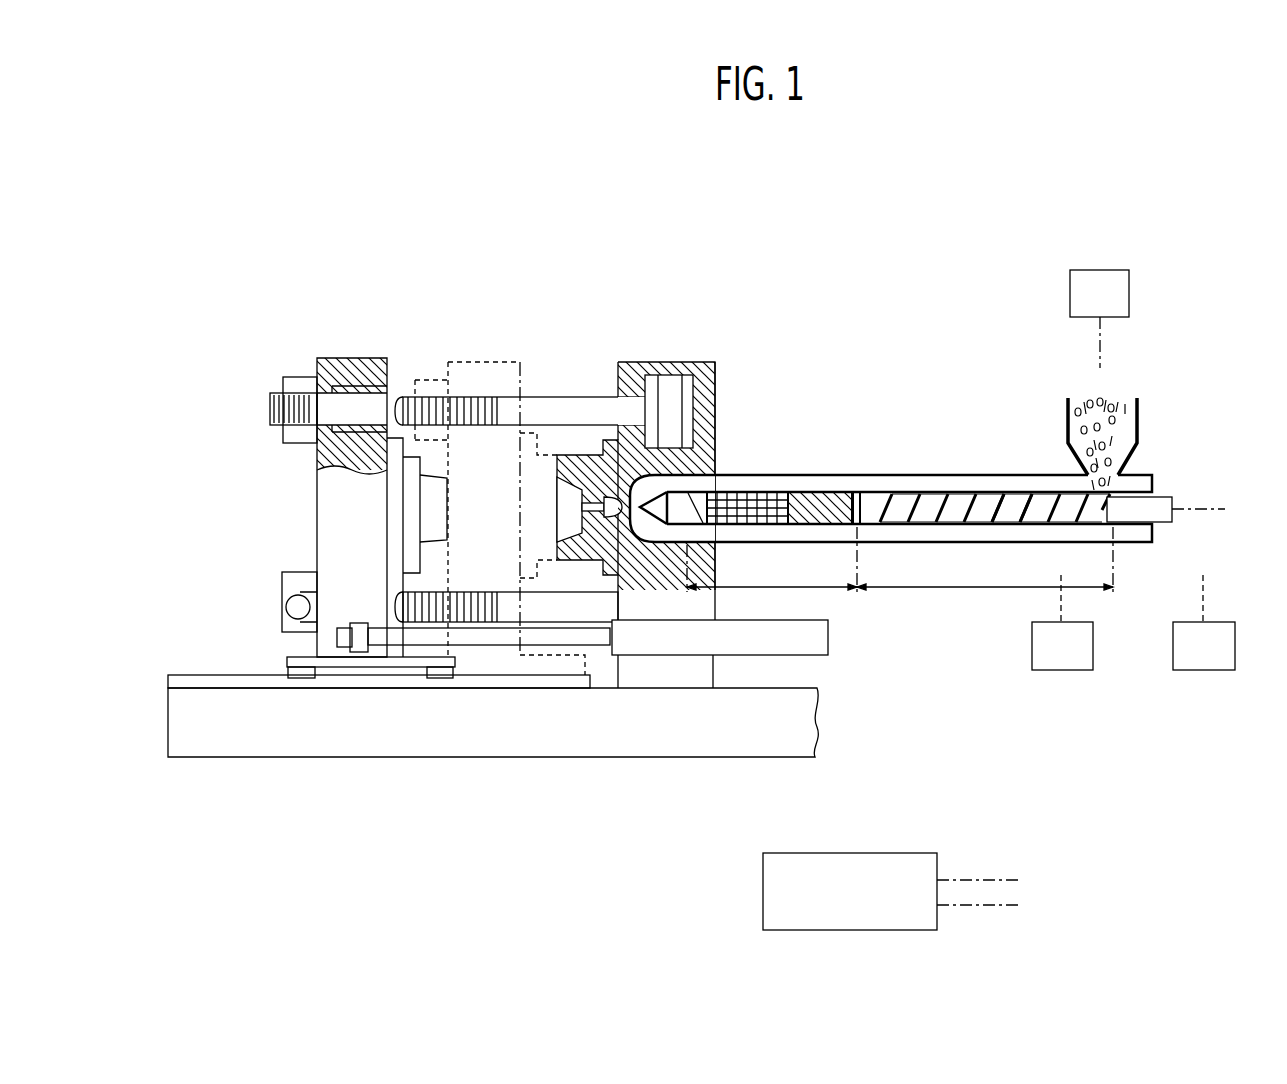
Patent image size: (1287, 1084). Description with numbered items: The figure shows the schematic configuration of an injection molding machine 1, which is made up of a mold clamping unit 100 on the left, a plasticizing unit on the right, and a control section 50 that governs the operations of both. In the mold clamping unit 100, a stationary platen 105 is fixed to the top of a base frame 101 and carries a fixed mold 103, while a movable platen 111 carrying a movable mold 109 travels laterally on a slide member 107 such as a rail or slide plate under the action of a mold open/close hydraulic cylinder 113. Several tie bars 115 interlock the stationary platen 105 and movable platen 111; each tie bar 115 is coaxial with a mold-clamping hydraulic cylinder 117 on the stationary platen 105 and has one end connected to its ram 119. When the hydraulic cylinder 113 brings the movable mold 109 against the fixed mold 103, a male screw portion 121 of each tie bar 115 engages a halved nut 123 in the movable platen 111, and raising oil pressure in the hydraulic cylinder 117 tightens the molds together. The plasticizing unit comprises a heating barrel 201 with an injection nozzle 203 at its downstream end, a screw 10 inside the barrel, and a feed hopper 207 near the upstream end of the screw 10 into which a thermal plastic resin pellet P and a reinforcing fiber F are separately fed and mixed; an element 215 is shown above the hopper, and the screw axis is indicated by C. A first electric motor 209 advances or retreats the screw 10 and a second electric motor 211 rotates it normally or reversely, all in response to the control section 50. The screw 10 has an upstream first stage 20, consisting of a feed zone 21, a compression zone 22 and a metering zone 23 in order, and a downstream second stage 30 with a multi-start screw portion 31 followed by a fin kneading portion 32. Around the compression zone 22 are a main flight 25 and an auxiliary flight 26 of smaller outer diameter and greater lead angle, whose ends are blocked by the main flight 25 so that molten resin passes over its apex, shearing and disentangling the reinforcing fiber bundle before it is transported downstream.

The injection molding machine 1 is at (748, 196).
The mold clamping unit 100 is at (513, 236).
The base frame 101 is at (772, 758).
The fixed mold 103 is at (566, 455).
The stationary platen 105 is at (716, 404).
The slide member 107 is at (210, 675).
The movable mold 109 is at (447, 538).
The movable platen 111 is at (337, 357).
The hydraulic cylinder 113 is at (645, 660).
The tie bar 115 is at (597, 397).
The mold-clamping hydraulic cylinder 117 is at (708, 368).
The ram 119 is at (668, 392).
The male screw portion 121 is at (432, 388).
The halved nut 123 is at (296, 376).
The screw 10 is at (810, 472).
The heating barrel 201 is at (884, 474).
The injection nozzle 203 is at (612, 497).
The feed hopper 207 is at (1140, 422).
The first electric motor 209 is at (1058, 672).
The second electric motor 211 is at (1200, 672).
The material feeder 215 is at (1103, 268).
The first stage 20 is at (985, 575).
The feed zone 21 is at (1047, 526).
The compression zone 22 is at (1000, 527).
The metering zone 23 is at (870, 527).
The main flight 25 is at (956, 474).
The auxiliary flight 26 is at (1000, 495).
The second stage 30 is at (772, 575).
The multi-start screw portion 31 is at (818, 527).
The fin kneading portion 32 is at (740, 527).
The control section 50 is at (763, 890).
The thermal plastic resin pellet P is at (1105, 400).
The reinforcing fiber F is at (1133, 402).
The center axis C is at (1180, 508).